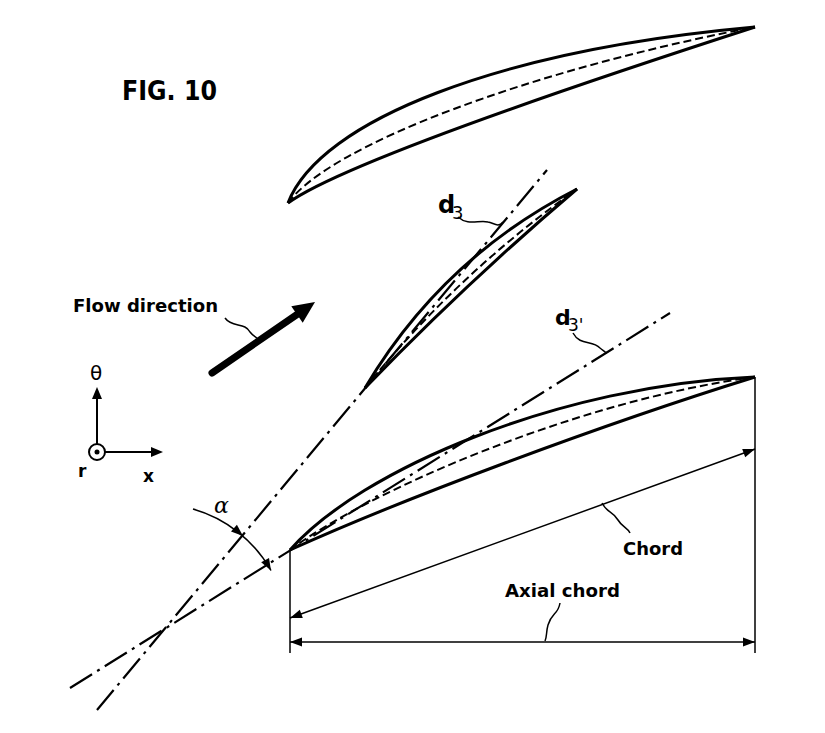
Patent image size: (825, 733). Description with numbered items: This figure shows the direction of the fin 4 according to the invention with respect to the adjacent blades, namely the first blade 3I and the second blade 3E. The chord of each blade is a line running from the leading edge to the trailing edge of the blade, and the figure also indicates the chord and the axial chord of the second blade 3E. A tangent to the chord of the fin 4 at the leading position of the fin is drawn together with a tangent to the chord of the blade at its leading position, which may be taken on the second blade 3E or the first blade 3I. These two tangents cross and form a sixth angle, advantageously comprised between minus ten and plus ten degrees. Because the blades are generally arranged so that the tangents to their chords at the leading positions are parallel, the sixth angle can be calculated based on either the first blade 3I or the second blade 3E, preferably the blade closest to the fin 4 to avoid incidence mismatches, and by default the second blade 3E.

The first blade 3I is at (652, 72).
The second blade 3E is at (680, 370).
The fin 4 is at (540, 242).